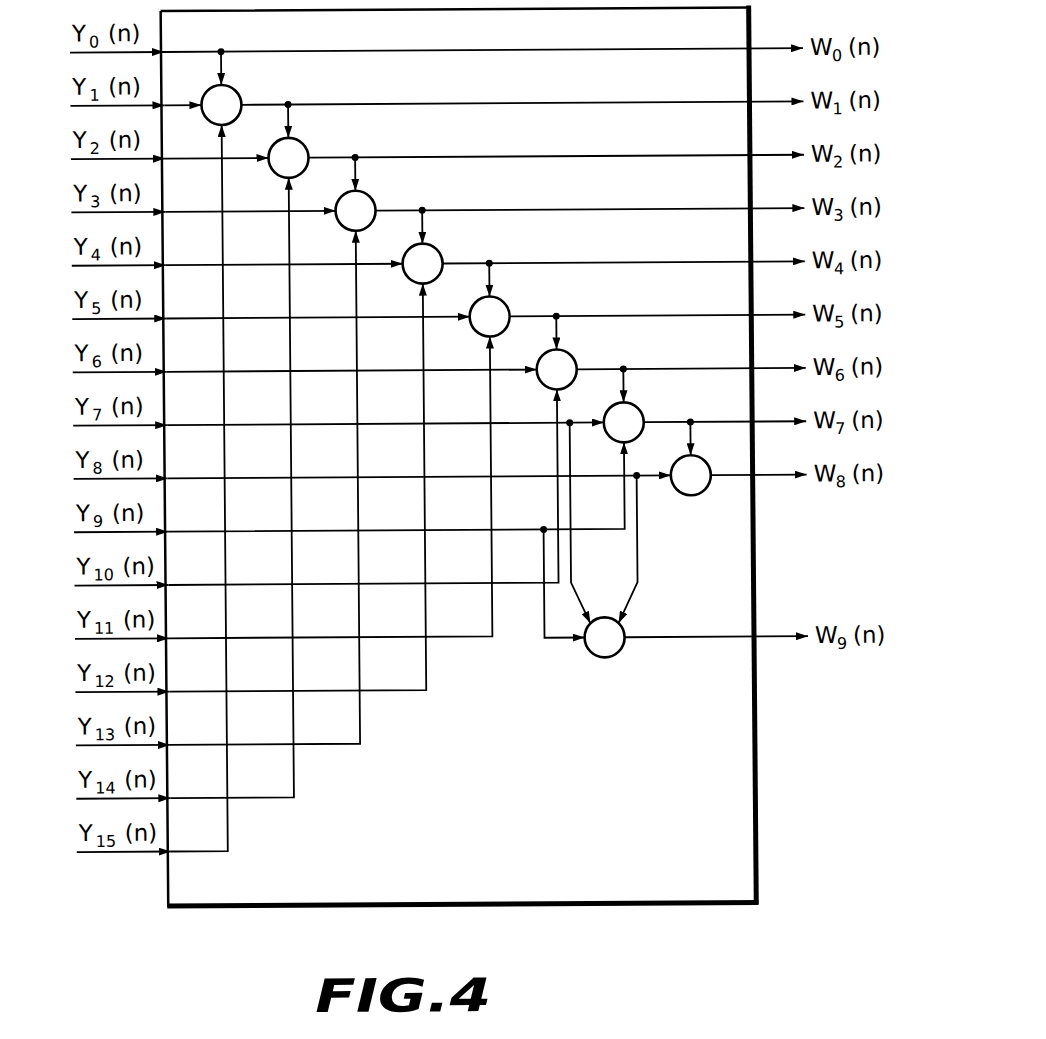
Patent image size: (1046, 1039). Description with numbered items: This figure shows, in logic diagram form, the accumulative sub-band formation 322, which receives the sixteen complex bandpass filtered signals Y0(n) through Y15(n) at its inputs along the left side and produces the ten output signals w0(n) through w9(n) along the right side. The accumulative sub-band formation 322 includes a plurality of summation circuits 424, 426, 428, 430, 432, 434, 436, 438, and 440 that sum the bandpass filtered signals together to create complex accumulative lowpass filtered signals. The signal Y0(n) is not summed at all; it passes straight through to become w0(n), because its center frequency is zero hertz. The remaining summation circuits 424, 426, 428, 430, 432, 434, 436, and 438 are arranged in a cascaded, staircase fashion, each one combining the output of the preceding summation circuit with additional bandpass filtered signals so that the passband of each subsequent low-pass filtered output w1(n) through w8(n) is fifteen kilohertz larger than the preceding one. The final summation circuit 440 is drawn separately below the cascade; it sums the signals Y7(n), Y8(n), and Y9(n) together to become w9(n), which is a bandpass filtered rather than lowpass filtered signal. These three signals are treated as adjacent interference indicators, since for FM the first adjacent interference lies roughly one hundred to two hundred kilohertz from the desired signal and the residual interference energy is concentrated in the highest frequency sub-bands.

The accumulative sub-band formation 322 is at (645, 822).
The summation circuit 424 is at (235, 90).
The summation circuit 426 is at (302, 143).
The summation circuit 428 is at (368, 197).
The summation circuit 430 is at (435, 250).
The summation circuit 432 is at (501, 303).
The summation circuit 434 is at (568, 356).
The summation circuit 436 is at (635, 410).
The summation circuit 438 is at (690, 499).
The summation circuit 440 is at (603, 660).